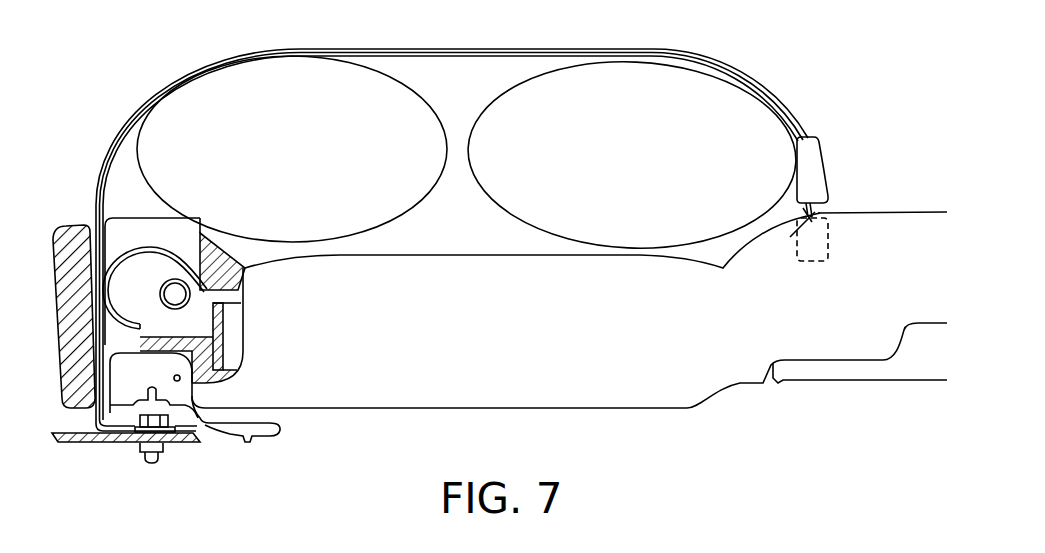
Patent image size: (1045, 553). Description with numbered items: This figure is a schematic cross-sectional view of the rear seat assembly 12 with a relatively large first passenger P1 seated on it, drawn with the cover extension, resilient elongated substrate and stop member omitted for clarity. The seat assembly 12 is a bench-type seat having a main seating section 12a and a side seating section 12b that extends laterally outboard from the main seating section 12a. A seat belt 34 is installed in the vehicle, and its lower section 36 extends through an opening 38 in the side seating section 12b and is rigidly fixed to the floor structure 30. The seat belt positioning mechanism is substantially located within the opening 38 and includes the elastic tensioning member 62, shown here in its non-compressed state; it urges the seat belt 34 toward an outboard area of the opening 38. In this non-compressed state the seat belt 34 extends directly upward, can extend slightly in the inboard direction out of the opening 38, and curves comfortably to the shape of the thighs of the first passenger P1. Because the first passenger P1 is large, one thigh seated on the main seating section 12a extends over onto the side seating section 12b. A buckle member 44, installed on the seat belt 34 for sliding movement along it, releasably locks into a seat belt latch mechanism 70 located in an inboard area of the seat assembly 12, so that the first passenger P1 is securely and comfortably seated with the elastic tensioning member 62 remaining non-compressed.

The seat assembly 12 is at (912, 211).
The main seating section 12a is at (452, 254).
The side seating section 12b is at (117, 216).
The floor structure 30 is at (80, 431).
The seat belt 34 is at (116, 146).
The lower section 36 is at (102, 421).
The opening 38 is at (177, 243).
The buckle member 44 is at (811, 174).
The elastic tensioning member 62 is at (150, 246).
The seat belt latch mechanism 70 is at (812, 240).
The first passenger P1 is at (573, 98).